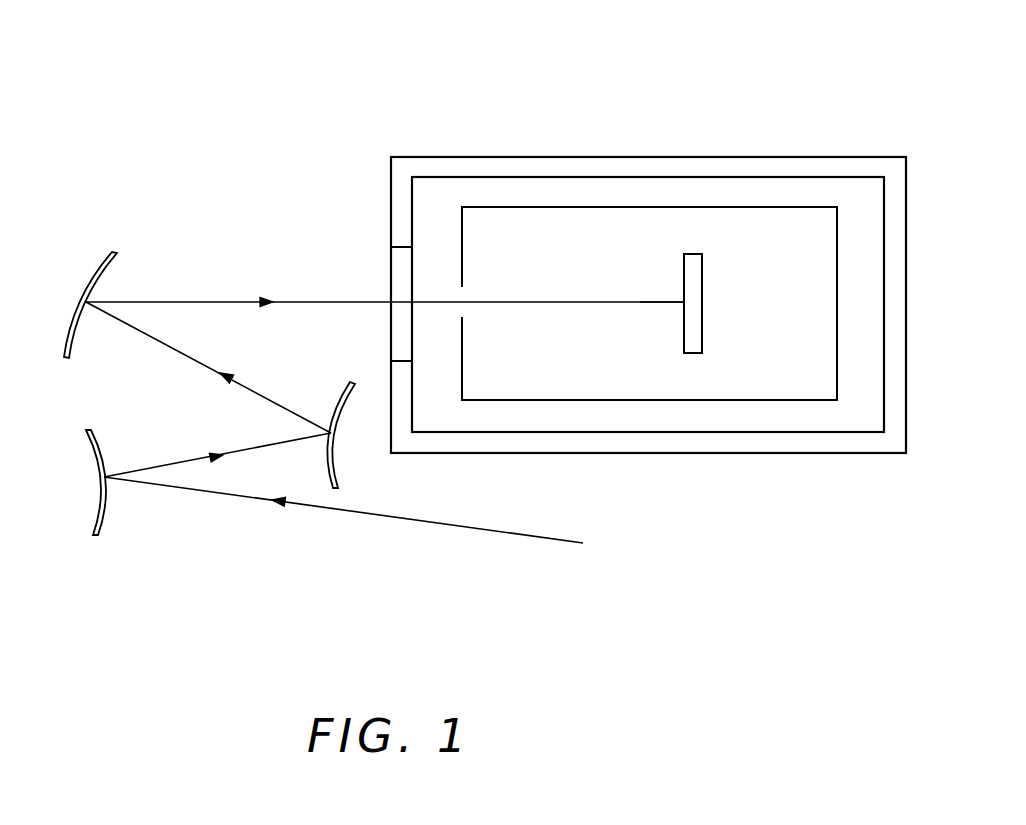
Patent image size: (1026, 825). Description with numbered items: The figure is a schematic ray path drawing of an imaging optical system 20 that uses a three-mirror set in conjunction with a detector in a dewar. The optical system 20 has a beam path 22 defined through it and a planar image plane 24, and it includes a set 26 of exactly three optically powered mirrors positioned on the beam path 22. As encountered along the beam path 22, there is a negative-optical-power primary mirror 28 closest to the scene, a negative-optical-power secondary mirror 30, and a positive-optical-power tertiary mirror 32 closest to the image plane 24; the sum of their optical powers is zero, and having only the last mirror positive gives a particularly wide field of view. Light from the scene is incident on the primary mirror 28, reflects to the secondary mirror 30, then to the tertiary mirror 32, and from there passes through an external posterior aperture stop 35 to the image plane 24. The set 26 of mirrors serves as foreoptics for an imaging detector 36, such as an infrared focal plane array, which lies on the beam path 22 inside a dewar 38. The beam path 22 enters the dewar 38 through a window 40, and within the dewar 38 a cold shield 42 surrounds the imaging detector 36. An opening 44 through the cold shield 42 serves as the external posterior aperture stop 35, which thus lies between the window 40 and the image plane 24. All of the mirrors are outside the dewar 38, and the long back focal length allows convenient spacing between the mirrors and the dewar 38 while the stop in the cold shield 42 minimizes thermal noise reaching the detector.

The imaging optical system 20 is at (215, 121).
The beam path 22 is at (303, 301).
The image plane 24 is at (683, 301).
The set of mirrors 26 is at (207, 430).
The primary mirror 28 is at (90, 452).
The secondary mirror 30 is at (362, 438).
The tertiary mirror 32 is at (101, 262).
The external posterior aperture stop 35 is at (464, 288).
The imaging detector 36 is at (696, 341).
The dewar 38 is at (825, 454).
The window 40 is at (391, 275).
The cold shield 42 is at (462, 238).
The opening 44 is at (467, 319).